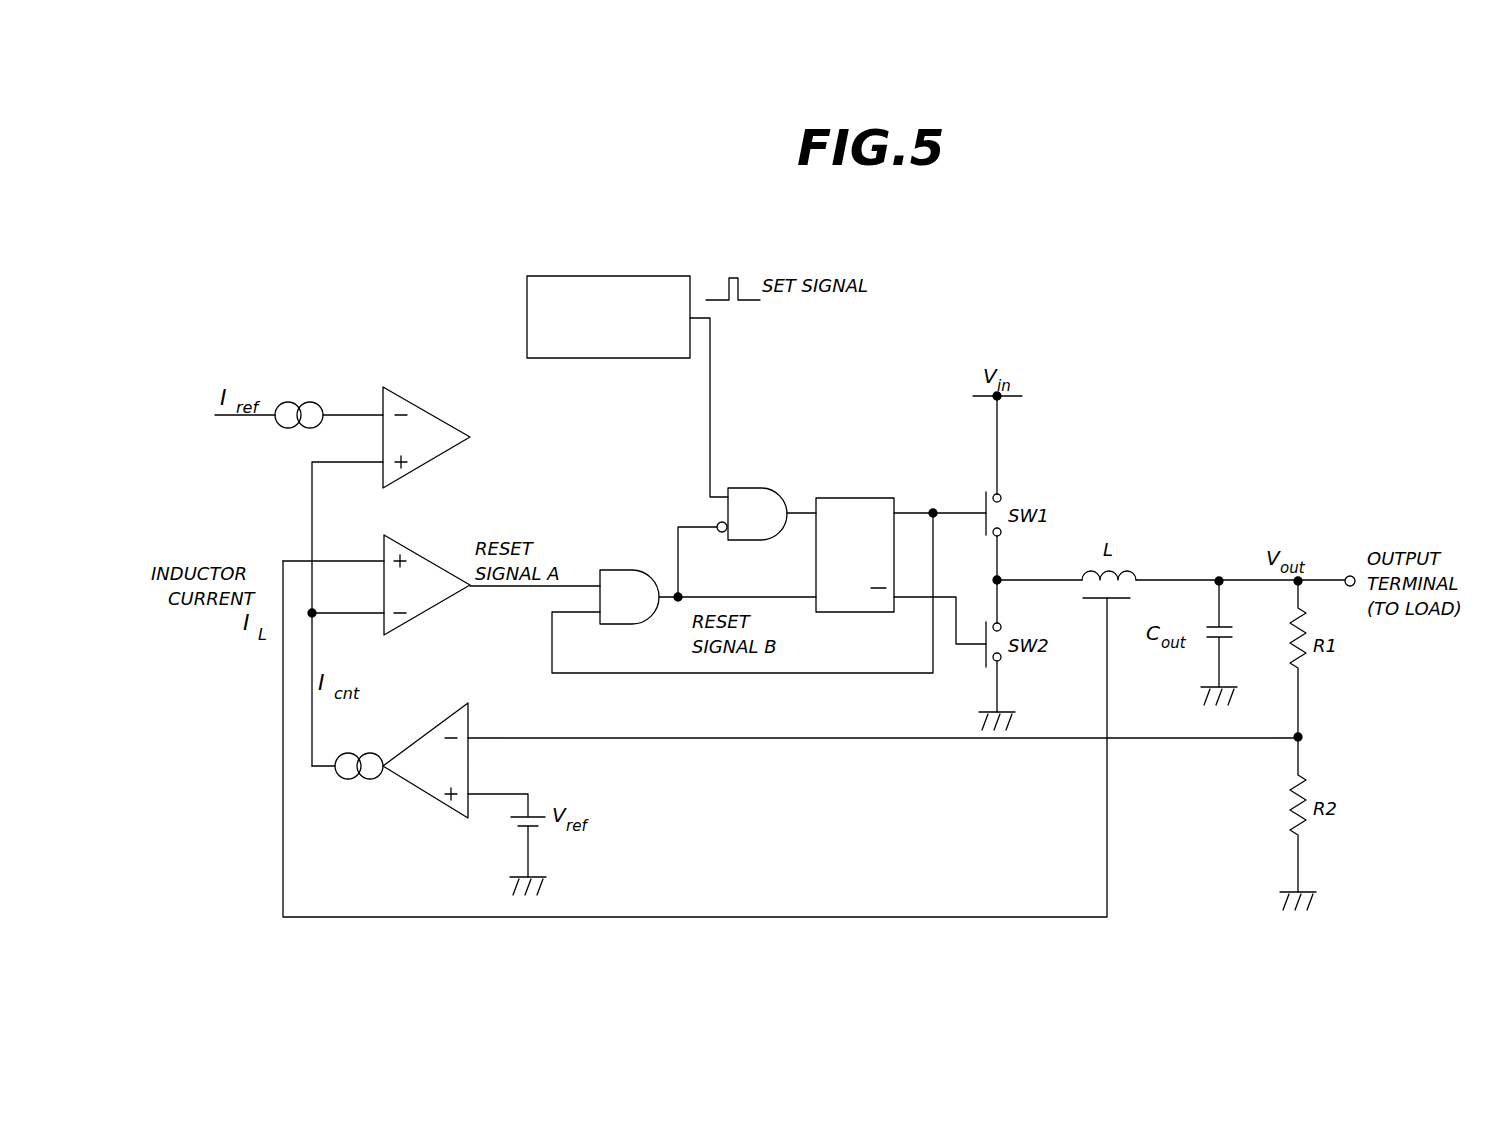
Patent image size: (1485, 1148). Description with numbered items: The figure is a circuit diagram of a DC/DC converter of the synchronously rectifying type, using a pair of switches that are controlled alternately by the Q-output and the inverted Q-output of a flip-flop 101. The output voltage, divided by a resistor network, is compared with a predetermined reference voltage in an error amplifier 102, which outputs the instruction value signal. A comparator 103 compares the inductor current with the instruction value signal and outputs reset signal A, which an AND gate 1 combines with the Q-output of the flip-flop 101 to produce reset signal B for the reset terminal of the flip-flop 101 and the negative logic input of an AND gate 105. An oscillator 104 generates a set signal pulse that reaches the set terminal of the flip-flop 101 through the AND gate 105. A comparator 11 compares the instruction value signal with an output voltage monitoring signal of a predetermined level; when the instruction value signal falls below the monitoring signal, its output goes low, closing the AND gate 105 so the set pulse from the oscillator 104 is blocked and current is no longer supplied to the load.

The oscillator 104 is at (527, 316).
The comparator 11 is at (428, 412).
The comparator 103 is at (428, 560).
The AND gate 1 is at (620, 570).
The AND gate 105 is at (745, 488).
The flip-flop 101 is at (852, 498).
The error amplifier 102 is at (453, 805).